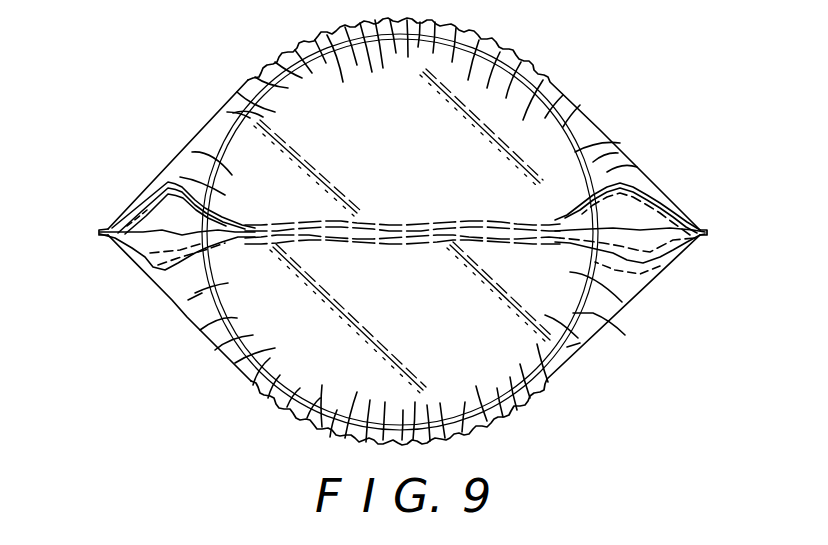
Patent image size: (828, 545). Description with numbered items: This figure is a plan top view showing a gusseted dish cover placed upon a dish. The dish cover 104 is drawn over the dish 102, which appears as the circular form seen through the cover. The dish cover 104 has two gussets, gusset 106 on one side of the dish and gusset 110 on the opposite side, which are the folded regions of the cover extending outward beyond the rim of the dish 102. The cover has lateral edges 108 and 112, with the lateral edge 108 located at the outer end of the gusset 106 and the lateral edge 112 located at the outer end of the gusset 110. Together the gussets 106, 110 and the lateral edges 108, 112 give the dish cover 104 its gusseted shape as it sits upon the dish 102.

The dish 102 is at (523, 63).
The dish cover 104 is at (583, 111).
The gusset 106 is at (150, 218).
The lateral edge 108 is at (101, 238).
The gusset 110 is at (653, 220).
The lateral edge 112 is at (706, 234).